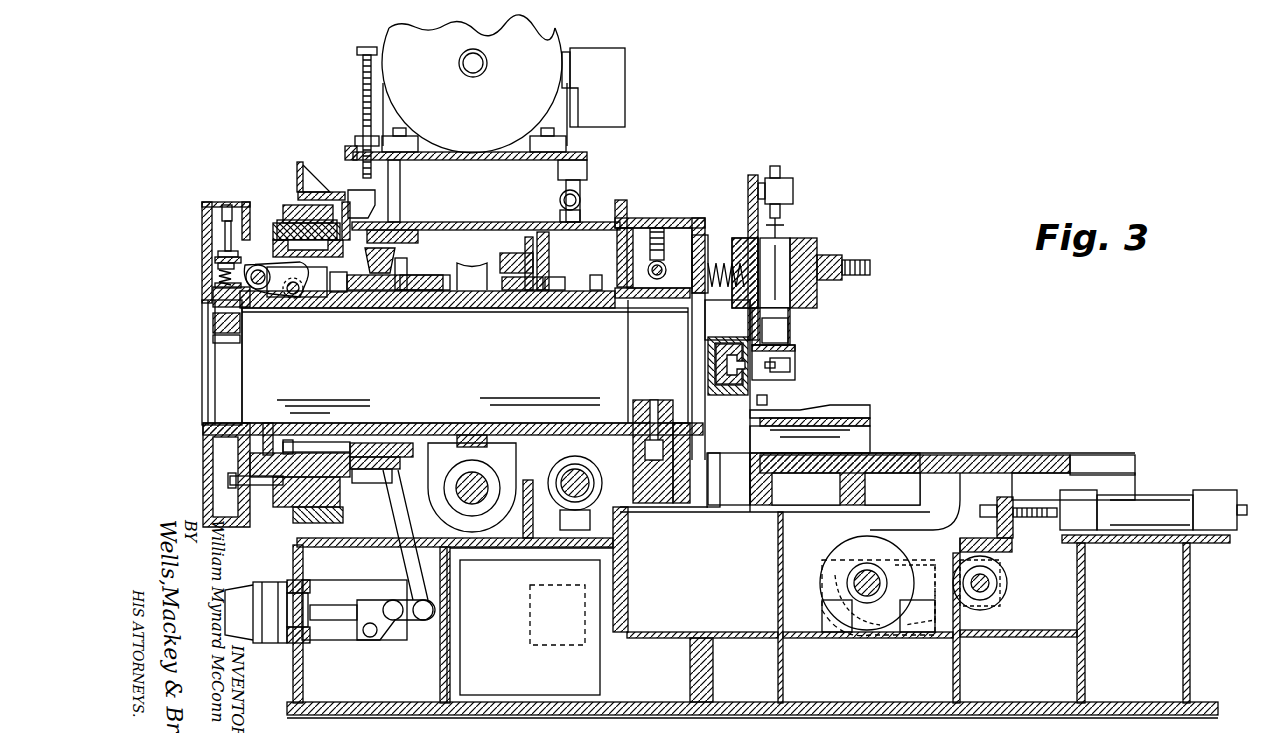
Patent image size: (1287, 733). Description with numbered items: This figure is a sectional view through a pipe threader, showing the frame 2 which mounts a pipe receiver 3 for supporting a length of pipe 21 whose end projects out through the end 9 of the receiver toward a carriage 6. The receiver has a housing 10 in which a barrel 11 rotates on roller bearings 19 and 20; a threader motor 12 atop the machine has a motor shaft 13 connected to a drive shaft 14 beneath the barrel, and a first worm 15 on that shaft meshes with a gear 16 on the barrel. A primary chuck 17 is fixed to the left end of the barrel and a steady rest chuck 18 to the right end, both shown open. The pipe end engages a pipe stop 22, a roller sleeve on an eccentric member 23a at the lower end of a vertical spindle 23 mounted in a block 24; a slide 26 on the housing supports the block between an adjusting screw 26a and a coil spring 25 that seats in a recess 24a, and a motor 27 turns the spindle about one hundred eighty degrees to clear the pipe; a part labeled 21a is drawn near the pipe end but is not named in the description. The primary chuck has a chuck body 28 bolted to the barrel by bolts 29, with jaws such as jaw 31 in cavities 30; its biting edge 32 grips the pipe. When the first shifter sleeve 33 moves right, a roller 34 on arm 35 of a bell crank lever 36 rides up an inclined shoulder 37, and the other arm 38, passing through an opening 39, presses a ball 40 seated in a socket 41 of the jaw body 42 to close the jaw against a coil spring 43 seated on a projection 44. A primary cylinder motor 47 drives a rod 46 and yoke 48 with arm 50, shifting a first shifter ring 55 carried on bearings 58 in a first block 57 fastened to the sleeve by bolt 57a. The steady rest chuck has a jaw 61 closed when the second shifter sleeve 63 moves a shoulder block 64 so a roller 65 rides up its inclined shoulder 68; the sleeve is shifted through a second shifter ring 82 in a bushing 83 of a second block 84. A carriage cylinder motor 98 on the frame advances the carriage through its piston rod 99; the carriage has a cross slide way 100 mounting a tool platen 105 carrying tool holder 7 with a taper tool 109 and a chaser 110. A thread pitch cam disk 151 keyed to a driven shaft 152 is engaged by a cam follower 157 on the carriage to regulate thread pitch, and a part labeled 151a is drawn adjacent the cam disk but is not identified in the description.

The frame 2 is at (1086, 585).
The pipe receiver 3 is at (283, 190).
The carriage 6 is at (975, 455).
The tool holder 7 is at (790, 355).
The end of the receiver 9 is at (718, 335).
The housing 10 is at (425, 222).
The barrel 11 is at (540, 309).
The threader motor 12 is at (540, 105).
The motor shaft 13 is at (488, 63).
The drive shaft 14 is at (478, 500).
The first worm 15 is at (470, 520).
The gear 16 is at (472, 445).
The primary chuck 17 is at (240, 200).
The secondary or steady rest chuck 18 is at (650, 232).
The roller bearing 19 is at (295, 505).
The roller bearing 20 is at (478, 268).
The pipe 21 is at (735, 395).
The pin 21a is at (727, 368).
The pipe stop 22 is at (790, 322).
The spindle 23 is at (785, 250).
The eccentric member 23a is at (788, 335).
The block 24 is at (817, 248).
The recess 24a is at (748, 235).
The coil spring 25 is at (713, 288).
The slide 26 is at (733, 258).
The adjusting screw 26a is at (860, 265).
The motor 27 is at (790, 180).
The chuck body 28 is at (213, 448).
The bolt 29 is at (228, 480).
The cavity 30 is at (222, 212).
The jaw 31 is at (213, 325).
The gripping or biting edge 32 is at (213, 340).
The first shifter sleeve 33 is at (365, 305).
The roller 34 is at (293, 298).
The arm 35 is at (306, 292).
The bell crank lever 36 is at (258, 290).
The inclined shoulder 37 is at (270, 447).
The arm 38 is at (215, 260).
The opening 39 is at (258, 252).
The ball 40 is at (218, 266).
The socket 41 is at (219, 278).
The body of the jaw 42 is at (215, 286).
The coil spring 43 is at (225, 236).
The projection 44 is at (218, 254).
The rod 46 is at (352, 625).
The primary cylinder motor 47 is at (275, 643).
The yoke 48 is at (395, 550).
The arm 50 is at (365, 483).
The first shifter ring 55 is at (395, 253).
The first block 57 is at (407, 268).
The bolt 57a is at (320, 440).
The bearing 58 is at (405, 283).
The jaw 61 is at (653, 405).
The second shifter sleeve 63 is at (570, 302).
The shoulder block 64 is at (653, 280).
The roller 65 is at (664, 262).
The inclined shoulder 68 is at (596, 300).
The second shifter ring 82 is at (543, 265).
The bushing 83 is at (596, 262).
The second block 84 is at (533, 262).
The carriage cylinder motor 98 is at (1176, 495).
The piston rod 99 is at (1042, 508).
The cross slide way 100 is at (870, 443).
The tool platen 105 is at (870, 422).
The taper tool 109 is at (760, 375).
The chaser 110 is at (790, 368).
The thread pitch cam disk 151 is at (925, 618).
The follower arm 151a is at (900, 578).
The driven shaft 152 is at (862, 575).
The cam follower 157 is at (1008, 582).